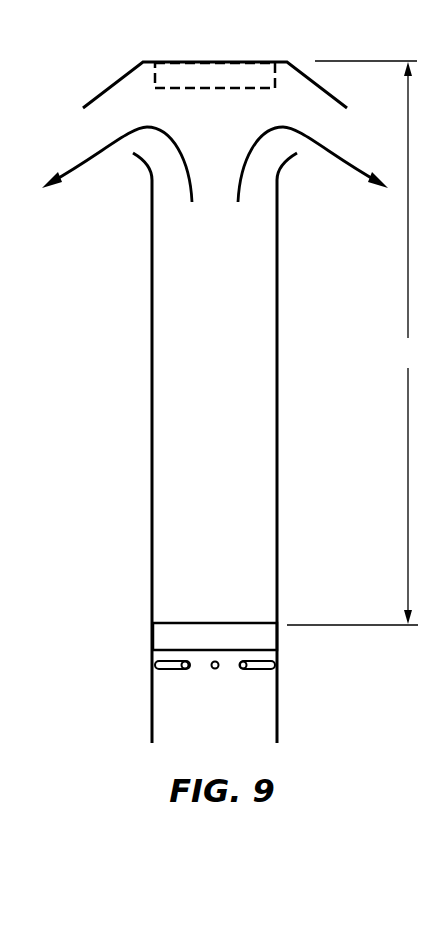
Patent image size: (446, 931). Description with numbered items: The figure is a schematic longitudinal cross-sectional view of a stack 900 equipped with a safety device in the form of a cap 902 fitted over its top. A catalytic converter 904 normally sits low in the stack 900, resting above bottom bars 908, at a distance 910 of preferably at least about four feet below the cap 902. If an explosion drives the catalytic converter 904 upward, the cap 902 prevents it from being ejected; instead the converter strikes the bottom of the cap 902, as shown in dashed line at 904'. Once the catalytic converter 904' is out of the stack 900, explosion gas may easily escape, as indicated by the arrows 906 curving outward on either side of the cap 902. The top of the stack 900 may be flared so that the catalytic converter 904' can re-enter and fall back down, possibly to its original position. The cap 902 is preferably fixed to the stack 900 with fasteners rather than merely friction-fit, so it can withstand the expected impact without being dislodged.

The stack 900 is at (282, 407).
The cap 902 is at (203, 60).
The catalytic converter 904 is at (215, 611).
The catalytic converter (displaced position) 904' is at (215, 100).
The arrows 906 is at (242, 168).
The bottom bars 908 is at (242, 669).
The distance 910 is at (357, 343).